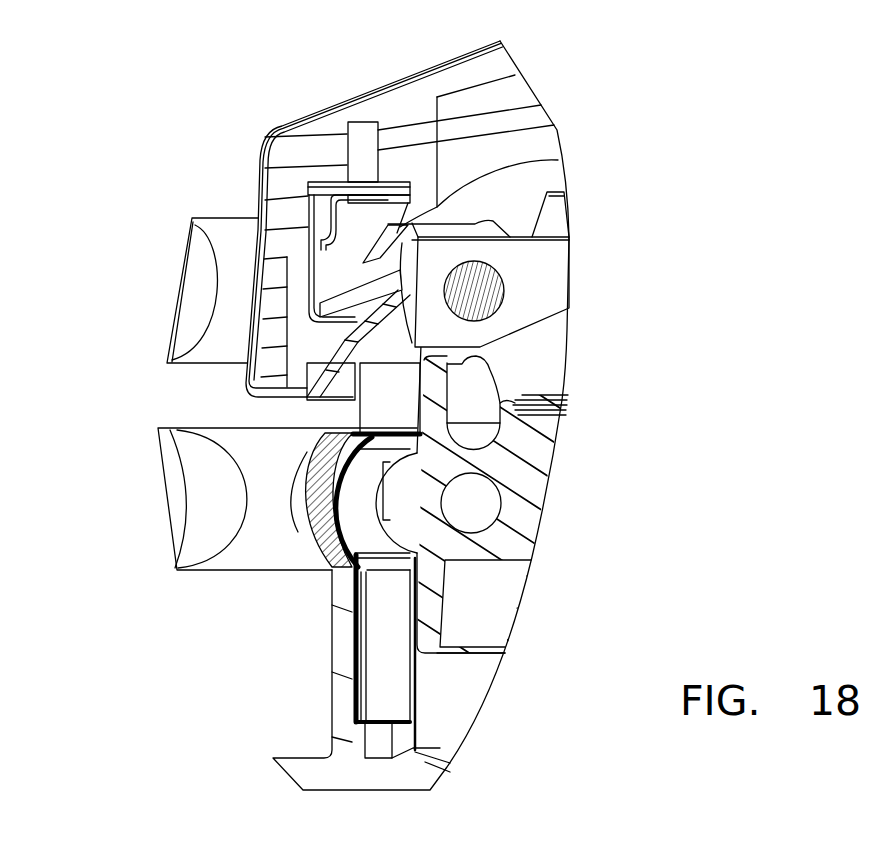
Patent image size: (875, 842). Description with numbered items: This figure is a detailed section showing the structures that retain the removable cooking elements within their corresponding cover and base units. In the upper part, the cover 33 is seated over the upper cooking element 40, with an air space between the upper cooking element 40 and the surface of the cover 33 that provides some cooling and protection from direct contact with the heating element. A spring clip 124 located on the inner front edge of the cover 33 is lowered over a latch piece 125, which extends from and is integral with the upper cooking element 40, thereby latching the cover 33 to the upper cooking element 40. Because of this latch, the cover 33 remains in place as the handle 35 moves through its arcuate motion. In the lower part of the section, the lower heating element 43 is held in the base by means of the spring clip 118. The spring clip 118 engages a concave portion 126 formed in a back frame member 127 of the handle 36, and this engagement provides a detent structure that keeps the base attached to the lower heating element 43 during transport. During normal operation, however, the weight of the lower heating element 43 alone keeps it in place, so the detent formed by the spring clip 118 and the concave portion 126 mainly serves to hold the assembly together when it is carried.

The cover 33 is at (437, 80).
The handle 35 is at (180, 276).
The handle 36 is at (157, 447).
The upper cooking element 40 is at (553, 212).
The lower heating element 43 is at (533, 483).
The spring clip 118 is at (315, 570).
The spring clip 124 is at (313, 290).
The latch piece 125 is at (558, 160).
The concave portion 126 is at (325, 433).
The back frame member 127 is at (300, 530).